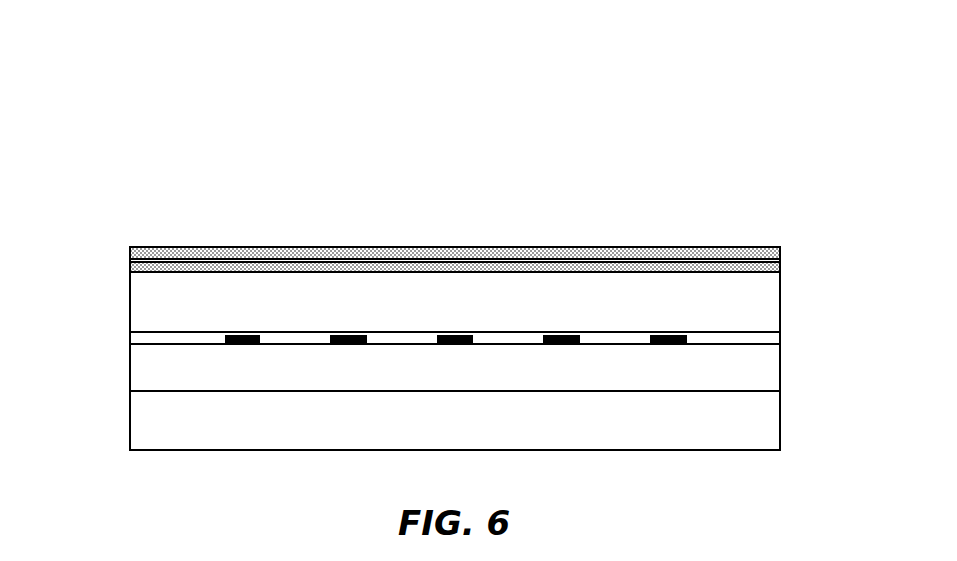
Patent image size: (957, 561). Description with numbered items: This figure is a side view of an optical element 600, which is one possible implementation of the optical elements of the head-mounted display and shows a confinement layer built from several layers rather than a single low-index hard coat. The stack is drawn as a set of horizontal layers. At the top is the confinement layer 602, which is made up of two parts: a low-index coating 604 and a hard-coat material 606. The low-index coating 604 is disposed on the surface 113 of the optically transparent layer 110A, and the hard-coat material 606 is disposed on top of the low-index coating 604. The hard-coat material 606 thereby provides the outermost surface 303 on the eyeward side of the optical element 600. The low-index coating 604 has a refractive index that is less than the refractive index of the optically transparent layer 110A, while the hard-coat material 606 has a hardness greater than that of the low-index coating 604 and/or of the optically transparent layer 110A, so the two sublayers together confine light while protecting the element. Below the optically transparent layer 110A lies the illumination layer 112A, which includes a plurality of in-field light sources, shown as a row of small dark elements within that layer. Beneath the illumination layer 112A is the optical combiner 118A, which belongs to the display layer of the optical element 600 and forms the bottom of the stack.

The optical element 600 is at (758, 95).
The confinement layer 602 is at (785, 247).
The low-index coating 604 is at (140, 267).
The hard-coat material 606 is at (155, 253).
The outermost surface 303 is at (465, 247).
The surface 113 is at (295, 273).
The optically transparent layer 110A is at (758, 312).
The illumination layer 112A is at (783, 332).
The optical combiner 118A is at (770, 427).